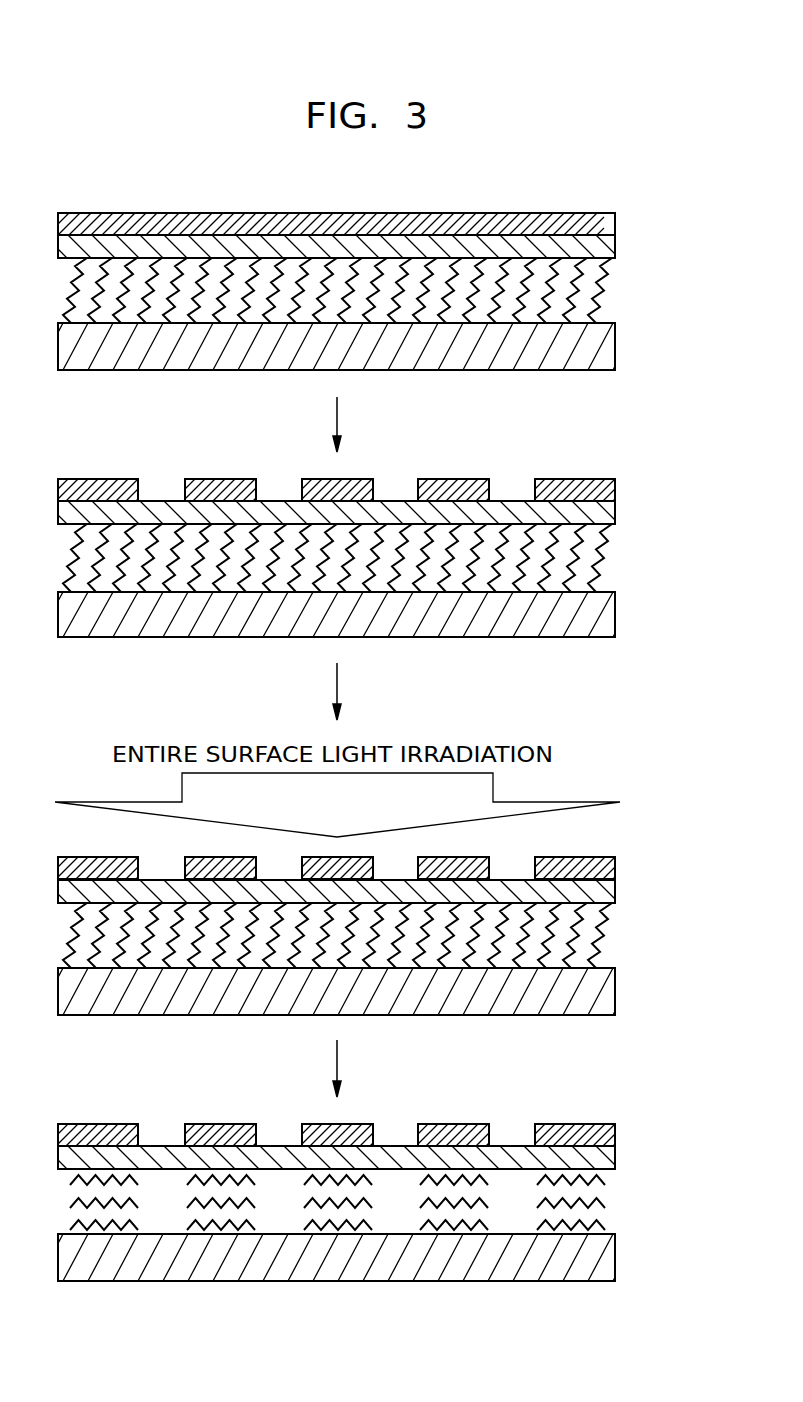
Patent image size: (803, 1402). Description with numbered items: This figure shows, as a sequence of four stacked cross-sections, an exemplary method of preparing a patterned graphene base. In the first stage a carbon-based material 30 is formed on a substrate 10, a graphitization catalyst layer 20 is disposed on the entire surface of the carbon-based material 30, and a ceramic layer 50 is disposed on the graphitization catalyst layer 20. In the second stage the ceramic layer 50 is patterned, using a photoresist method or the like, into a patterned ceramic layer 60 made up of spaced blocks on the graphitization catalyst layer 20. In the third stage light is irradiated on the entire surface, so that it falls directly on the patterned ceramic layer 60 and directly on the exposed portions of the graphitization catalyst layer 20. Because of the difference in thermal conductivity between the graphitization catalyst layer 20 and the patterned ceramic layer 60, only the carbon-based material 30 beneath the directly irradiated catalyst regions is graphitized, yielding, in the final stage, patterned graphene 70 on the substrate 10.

The substrate 10 is at (615, 348).
The graphitization catalyst layer 20 is at (615, 250).
The carbon-based material 30 is at (603, 300).
The ceramic layer 50 is at (615, 224).
The patterned ceramic layer 60 is at (615, 489).
The patterned graphene 70 is at (605, 1208).